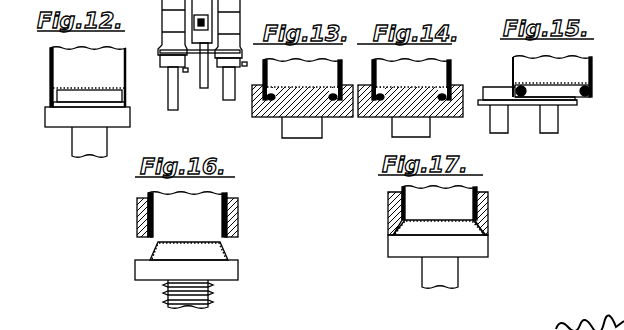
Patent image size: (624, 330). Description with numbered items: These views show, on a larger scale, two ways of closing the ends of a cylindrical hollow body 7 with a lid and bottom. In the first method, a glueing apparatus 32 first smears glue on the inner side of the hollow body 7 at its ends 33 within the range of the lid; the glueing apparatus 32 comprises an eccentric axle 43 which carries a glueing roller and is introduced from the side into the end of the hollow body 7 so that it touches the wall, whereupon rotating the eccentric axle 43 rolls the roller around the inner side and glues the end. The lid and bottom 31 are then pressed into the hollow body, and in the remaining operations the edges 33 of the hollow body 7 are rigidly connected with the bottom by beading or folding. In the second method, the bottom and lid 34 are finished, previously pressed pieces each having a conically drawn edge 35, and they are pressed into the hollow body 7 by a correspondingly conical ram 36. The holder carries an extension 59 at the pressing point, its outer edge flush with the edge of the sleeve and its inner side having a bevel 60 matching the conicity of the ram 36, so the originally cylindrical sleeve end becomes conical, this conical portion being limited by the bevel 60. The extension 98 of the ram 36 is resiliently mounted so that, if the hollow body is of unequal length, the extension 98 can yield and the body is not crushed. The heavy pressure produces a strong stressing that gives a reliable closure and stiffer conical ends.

In FIG. 13, the hollow body 7 is at (342, 62).
In FIG. 14, the hollow body 7 is at (372, 63).
In FIG. 15, the hollow body 7 is at (592, 68).
In FIG. 16, the hollow body 7 is at (219, 197).
In FIG. 17, the hollow body 7 is at (473, 186).
In FIG. 12, the lid and bottom 31 is at (89, 88).
In FIG. 13, the lid and bottom 31 is at (302, 77).
In FIG. 14, the lid and bottom 31 is at (411, 77).
In FIG. 15, the lid and bottom 31 is at (552, 80).
In FIG. 12, the glueing apparatus 32 is at (163, 15).
In FIG. 12, the ends of the hollow body 33 is at (50, 101).
In FIG. 16, the ends of the hollow body 33 is at (150, 243).
In FIG. 16, the bottom and lid 34 is at (185, 243).
In FIG. 17, the bottom and lid 34 is at (440, 222).
In FIG. 16, the conically drawn edge 35 is at (227, 257).
In FIG. 17, the conically drawn edge 35 is at (486, 228).
In FIG. 16, the conical ram 36 is at (162, 252).
In FIG. 17, the conical ram 36 is at (418, 228).
In FIG. 12, the eccentric axle 43 is at (238, 5).
In FIG. 16, the extension 59 is at (137, 205).
In FIG. 17, the extension 59 is at (488, 200).
In FIG. 16, the bevel 60 is at (140, 238).
In FIG. 17, the bevel 60 is at (400, 232).
In FIG. 16, the extension of the pressing-in ram 98 is at (230, 275).
In FIG. 17, the extension of the pressing-in ram 98 is at (482, 247).